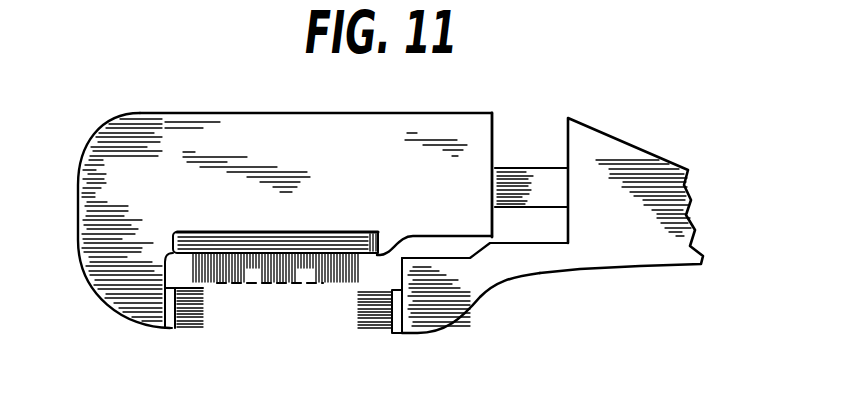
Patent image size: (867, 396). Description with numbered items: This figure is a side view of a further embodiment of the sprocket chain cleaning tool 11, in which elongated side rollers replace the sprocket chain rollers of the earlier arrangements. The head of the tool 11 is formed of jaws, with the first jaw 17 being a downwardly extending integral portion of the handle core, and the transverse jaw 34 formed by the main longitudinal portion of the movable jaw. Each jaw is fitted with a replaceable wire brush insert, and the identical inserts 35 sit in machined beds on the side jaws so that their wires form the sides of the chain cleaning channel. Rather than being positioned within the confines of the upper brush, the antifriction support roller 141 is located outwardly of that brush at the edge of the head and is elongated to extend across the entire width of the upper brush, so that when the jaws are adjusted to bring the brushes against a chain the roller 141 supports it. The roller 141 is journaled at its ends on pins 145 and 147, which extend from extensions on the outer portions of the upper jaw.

The tool 11 is at (642, 150).
The first jaw 17 is at (457, 303).
The transverse jaw 34 is at (252, 80).
The replaceable wire brush insert 35 is at (90, 298).
The support roller 141 is at (300, 233).
The pin 145 is at (377, 233).
The pin 147 is at (183, 233).